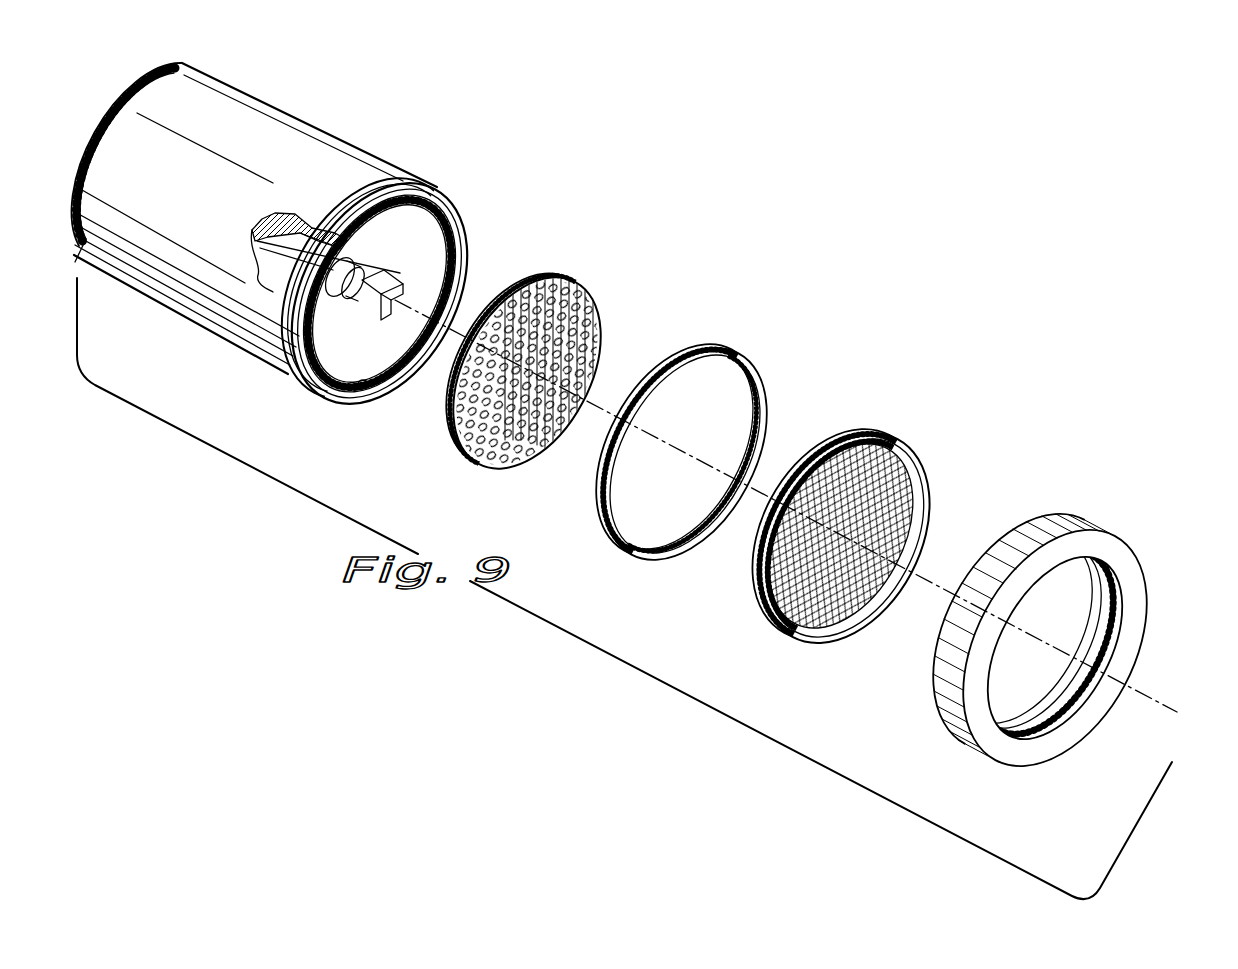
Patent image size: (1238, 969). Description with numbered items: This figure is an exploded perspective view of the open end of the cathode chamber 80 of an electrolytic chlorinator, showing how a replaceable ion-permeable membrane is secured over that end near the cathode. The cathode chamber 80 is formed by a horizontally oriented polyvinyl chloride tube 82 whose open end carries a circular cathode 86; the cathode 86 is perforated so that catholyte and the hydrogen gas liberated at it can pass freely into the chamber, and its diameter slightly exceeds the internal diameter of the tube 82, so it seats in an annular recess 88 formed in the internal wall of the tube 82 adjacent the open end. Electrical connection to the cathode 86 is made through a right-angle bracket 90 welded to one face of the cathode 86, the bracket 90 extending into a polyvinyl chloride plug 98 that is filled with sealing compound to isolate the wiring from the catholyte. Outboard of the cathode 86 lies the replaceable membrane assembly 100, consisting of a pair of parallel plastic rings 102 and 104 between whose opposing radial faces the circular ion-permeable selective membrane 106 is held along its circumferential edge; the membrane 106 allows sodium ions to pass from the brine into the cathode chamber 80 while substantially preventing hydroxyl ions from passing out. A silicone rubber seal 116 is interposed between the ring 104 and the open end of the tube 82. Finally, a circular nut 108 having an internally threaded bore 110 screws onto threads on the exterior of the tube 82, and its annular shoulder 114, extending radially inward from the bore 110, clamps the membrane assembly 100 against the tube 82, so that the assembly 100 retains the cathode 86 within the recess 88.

The cathode chamber 80 is at (246, 374).
The polyvinyl chloride tube 82 is at (368, 173).
The circular cathode 86 is at (575, 279).
The annular recess 88 is at (360, 390).
The right-angle bracket 90 is at (396, 292).
The polyvinyl chloride plug 98 is at (405, 242).
The replaceable membrane assembly 100 is at (885, 430).
The ring 102 is at (834, 637).
The ring 104 is at (766, 622).
The ion-permeable selective membrane 106 is at (925, 480).
The circular nut 108 is at (1091, 528).
The internally threaded bore 110 is at (1088, 656).
The annular shoulder 114 is at (1094, 706).
The silicone rubber seal 116 is at (757, 372).